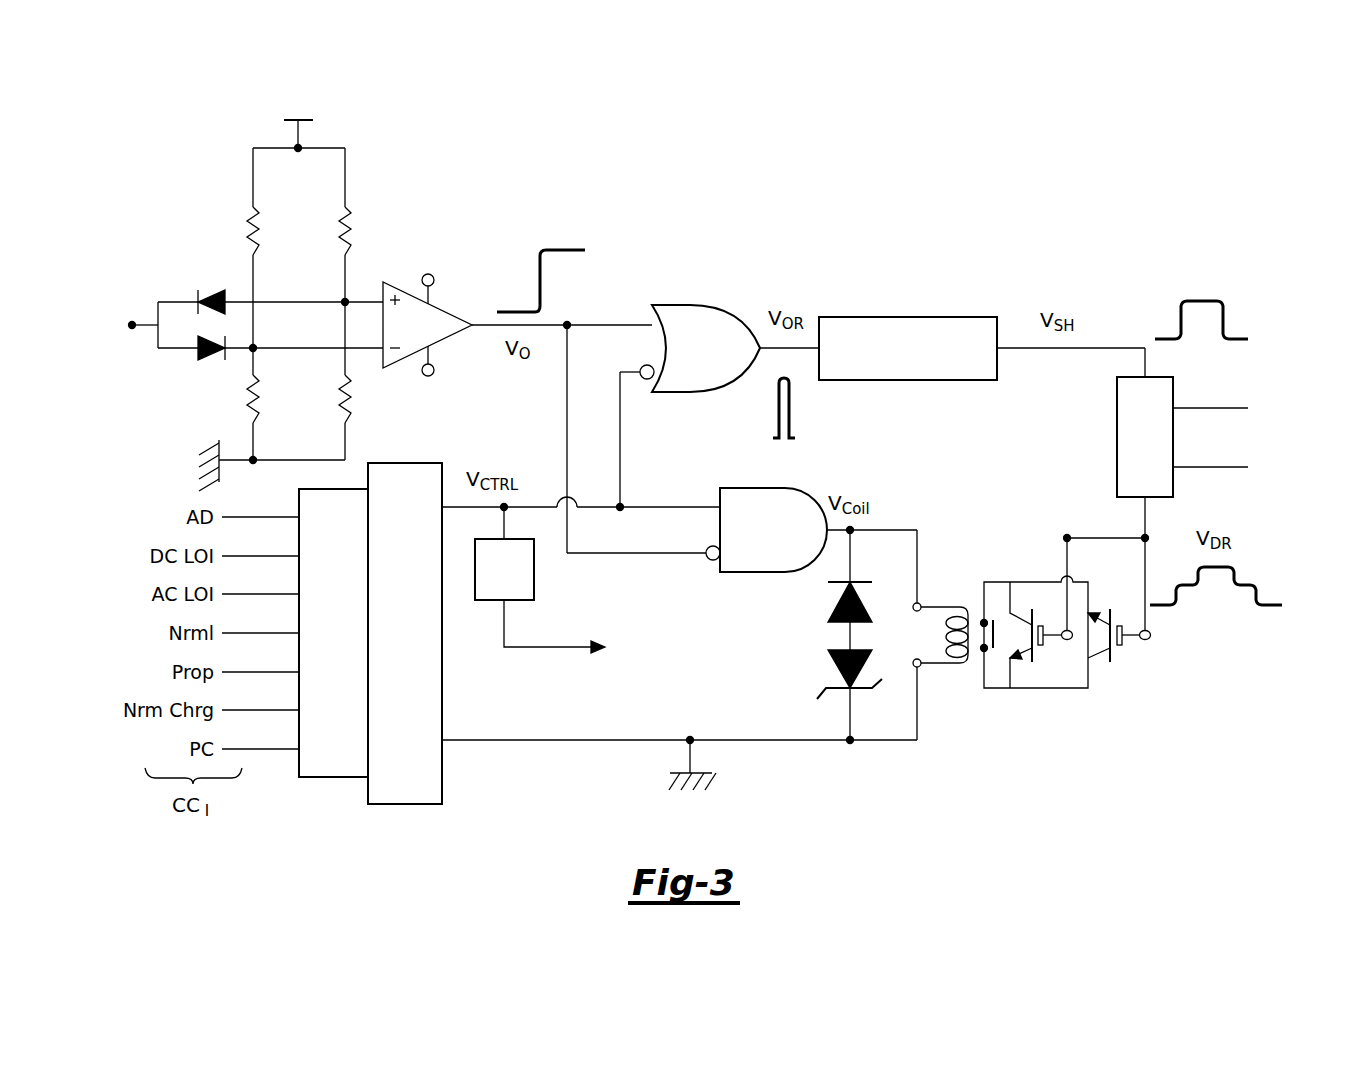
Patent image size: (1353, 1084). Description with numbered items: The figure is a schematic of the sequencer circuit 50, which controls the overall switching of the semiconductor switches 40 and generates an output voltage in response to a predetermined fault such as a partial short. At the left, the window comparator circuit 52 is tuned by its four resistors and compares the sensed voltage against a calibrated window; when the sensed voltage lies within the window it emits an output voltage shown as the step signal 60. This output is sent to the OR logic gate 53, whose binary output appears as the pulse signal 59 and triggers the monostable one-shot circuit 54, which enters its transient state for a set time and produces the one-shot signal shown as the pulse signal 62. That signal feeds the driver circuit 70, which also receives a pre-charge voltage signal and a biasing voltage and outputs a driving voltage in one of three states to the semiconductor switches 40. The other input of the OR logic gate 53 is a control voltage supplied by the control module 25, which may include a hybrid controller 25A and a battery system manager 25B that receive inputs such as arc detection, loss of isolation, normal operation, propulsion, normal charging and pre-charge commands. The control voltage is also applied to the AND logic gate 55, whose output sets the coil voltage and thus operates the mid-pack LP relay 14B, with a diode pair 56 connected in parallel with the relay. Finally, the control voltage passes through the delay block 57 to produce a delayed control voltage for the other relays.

The window comparator circuit 52 is at (443, 181).
The step signal 60 is at (564, 226).
The OR logic gate 53 is at (711, 364).
The pulse signal 59 is at (803, 407).
The one-shot circuit 54 is at (908, 317).
The sequencer circuit 50 is at (1009, 203).
The pulse signal 62 is at (1251, 286).
The driver circuit 70 is at (1161, 451).
The semiconductor switches 40 is at (1046, 706).
The AND logic gate 55 is at (785, 544).
The diode pair 56 is at (805, 650).
The mid-pack LP relay 14B is at (947, 680).
The delay block 57 is at (534, 580).
The control module 25 is at (433, 825).
The hybrid controller 25A is at (299, 777).
The battery system manager 25B is at (442, 787).